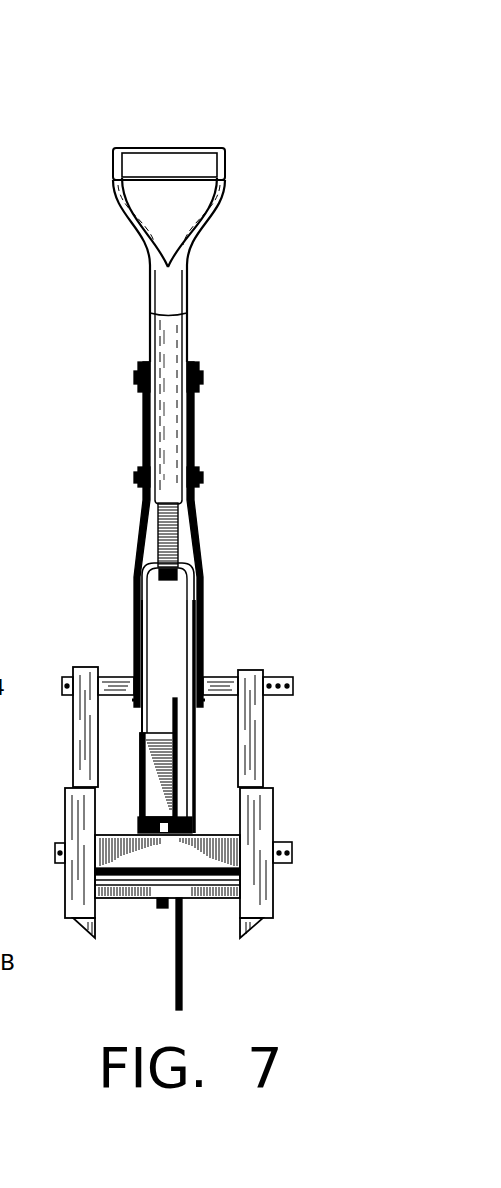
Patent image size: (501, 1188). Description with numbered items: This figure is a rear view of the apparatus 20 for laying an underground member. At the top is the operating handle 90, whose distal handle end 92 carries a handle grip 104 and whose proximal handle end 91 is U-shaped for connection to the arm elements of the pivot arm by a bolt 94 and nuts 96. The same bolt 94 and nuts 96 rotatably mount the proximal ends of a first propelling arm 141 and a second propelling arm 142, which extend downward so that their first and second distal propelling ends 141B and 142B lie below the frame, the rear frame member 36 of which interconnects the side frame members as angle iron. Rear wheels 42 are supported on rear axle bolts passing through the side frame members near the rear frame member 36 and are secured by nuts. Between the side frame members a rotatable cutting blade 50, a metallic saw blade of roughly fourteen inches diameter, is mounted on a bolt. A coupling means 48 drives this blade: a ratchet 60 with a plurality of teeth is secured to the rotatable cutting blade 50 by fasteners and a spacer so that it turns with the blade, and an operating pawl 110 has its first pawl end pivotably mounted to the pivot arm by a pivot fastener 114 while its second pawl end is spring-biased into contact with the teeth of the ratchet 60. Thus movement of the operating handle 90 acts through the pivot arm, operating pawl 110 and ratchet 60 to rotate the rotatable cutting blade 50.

The apparatus 20 is at (255, 117).
The handle grip 104 is at (158, 165).
The distal handle end 92 is at (180, 277).
The operating handle 90 is at (190, 407).
The proximal handle end 91 is at (180, 565).
The coupling means 48 is at (273, 603).
The nuts 96 is at (283, 677).
The bolt 94 is at (82, 625).
The first propelling arm 141 is at (257, 713).
The pivot fastener 114 is at (137, 752).
The operating pawl 110 is at (177, 772).
The second propelling arm 142 is at (80, 805).
The rear wheels 42 is at (67, 900).
The second distal propelling end 142B is at (100, 940).
The first distal propelling end 141B is at (257, 930).
The rear frame member 36 is at (118, 900).
The ratchet 60 is at (163, 907).
The rotatable cutting blade 50 is at (180, 952).